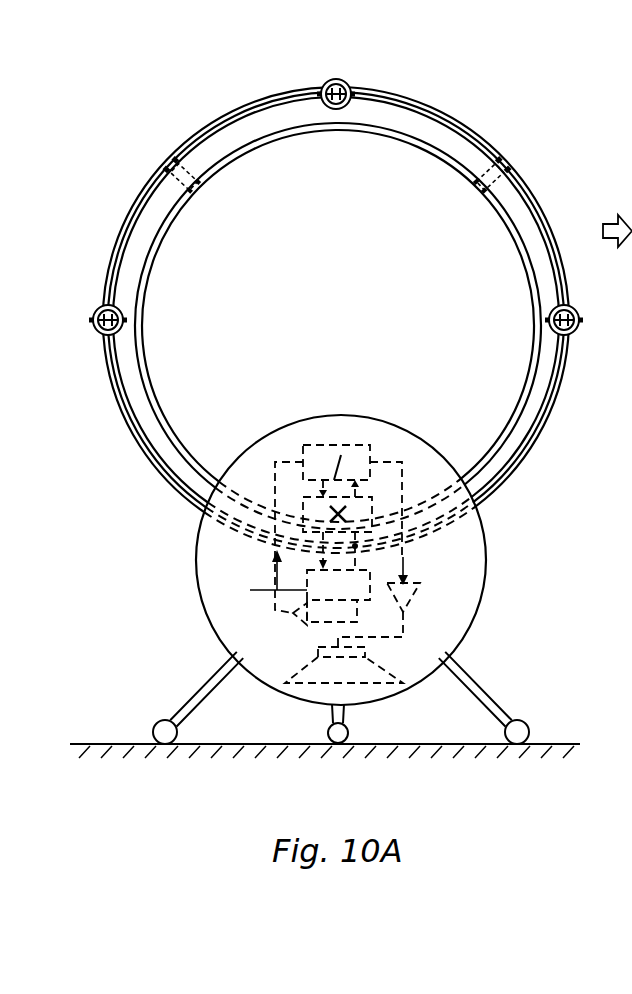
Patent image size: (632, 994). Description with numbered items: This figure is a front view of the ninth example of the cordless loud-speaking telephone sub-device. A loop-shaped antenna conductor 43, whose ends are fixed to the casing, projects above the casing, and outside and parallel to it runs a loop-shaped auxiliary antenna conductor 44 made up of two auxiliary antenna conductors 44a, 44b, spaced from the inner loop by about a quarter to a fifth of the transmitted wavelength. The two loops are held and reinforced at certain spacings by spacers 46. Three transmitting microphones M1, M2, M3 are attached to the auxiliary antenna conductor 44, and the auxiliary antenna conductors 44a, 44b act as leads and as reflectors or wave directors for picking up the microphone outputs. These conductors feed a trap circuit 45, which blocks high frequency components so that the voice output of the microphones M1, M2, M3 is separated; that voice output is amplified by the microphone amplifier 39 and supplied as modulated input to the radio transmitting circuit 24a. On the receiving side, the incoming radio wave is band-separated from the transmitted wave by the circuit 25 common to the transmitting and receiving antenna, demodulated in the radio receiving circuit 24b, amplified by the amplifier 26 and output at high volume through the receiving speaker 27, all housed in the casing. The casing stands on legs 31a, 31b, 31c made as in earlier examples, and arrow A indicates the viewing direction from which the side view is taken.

The radio transmitting circuit 24a is at (313, 447).
The radio receiving circuit 24b is at (365, 445).
The circuit common to the transmitting and receiving antenna 25 is at (403, 472).
The amplifier 26 is at (422, 600).
The receiving speaker 27 is at (305, 672).
The leg 31a is at (207, 690).
The leg 31b is at (478, 690).
The leg 31c is at (345, 708).
The microphone amplifier 39 is at (296, 621).
The loop-shaped antenna conductor 43 is at (420, 150).
The loop-shaped auxiliary antenna conductor 44 is at (344, 306).
The auxiliary antenna conductor 44a is at (453, 133).
The auxiliary antenna conductor 44b is at (438, 108).
The trap circuit 45 is at (289, 569).
The spacer 46 is at (493, 197).
The transmitting microphone M1 is at (342, 81).
The transmitting microphone M2 is at (94, 314).
The transmitting microphone M3 is at (578, 311).
The direction A arrow A is at (607, 232).